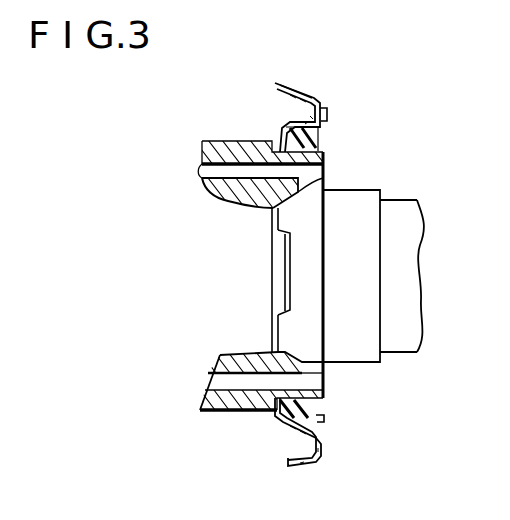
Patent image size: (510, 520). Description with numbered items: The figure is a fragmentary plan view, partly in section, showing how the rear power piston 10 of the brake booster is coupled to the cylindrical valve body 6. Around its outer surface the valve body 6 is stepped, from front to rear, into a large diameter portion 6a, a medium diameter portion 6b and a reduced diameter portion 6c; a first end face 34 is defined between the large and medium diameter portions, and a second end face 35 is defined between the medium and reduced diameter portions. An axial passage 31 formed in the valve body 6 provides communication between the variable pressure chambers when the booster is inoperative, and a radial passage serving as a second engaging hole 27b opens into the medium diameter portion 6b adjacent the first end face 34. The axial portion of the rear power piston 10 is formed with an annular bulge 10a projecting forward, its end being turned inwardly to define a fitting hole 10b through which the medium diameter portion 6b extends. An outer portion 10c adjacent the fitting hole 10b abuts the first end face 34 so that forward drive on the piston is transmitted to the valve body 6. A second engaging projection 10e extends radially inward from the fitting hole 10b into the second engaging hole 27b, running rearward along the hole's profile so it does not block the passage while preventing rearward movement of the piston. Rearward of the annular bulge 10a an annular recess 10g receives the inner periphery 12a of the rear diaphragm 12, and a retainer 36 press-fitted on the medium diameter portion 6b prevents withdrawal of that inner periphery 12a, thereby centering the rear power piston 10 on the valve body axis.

The valve body 6 is at (411, 358).
The large diameter portion 6a is at (228, 140).
The medium diameter portion 6b is at (325, 147).
The reduced diameter portion 6c is at (368, 190).
The rear power piston 10 is at (296, 442).
The annular bulge 10a is at (284, 417).
The fitting hole 10b is at (278, 396).
The outer portion 10c is at (250, 362).
The second engaging projection 10e is at (289, 277).
The annular recess 10g is at (324, 419).
The rear diaphragm 12 is at (298, 78).
The inner periphery 12a is at (315, 99).
The second engaging hole 27b is at (270, 253).
The axial passage 31 is at (212, 172).
The first end face 34 is at (283, 123).
The second end face 35 is at (324, 155).
The retainer 36 is at (321, 140).